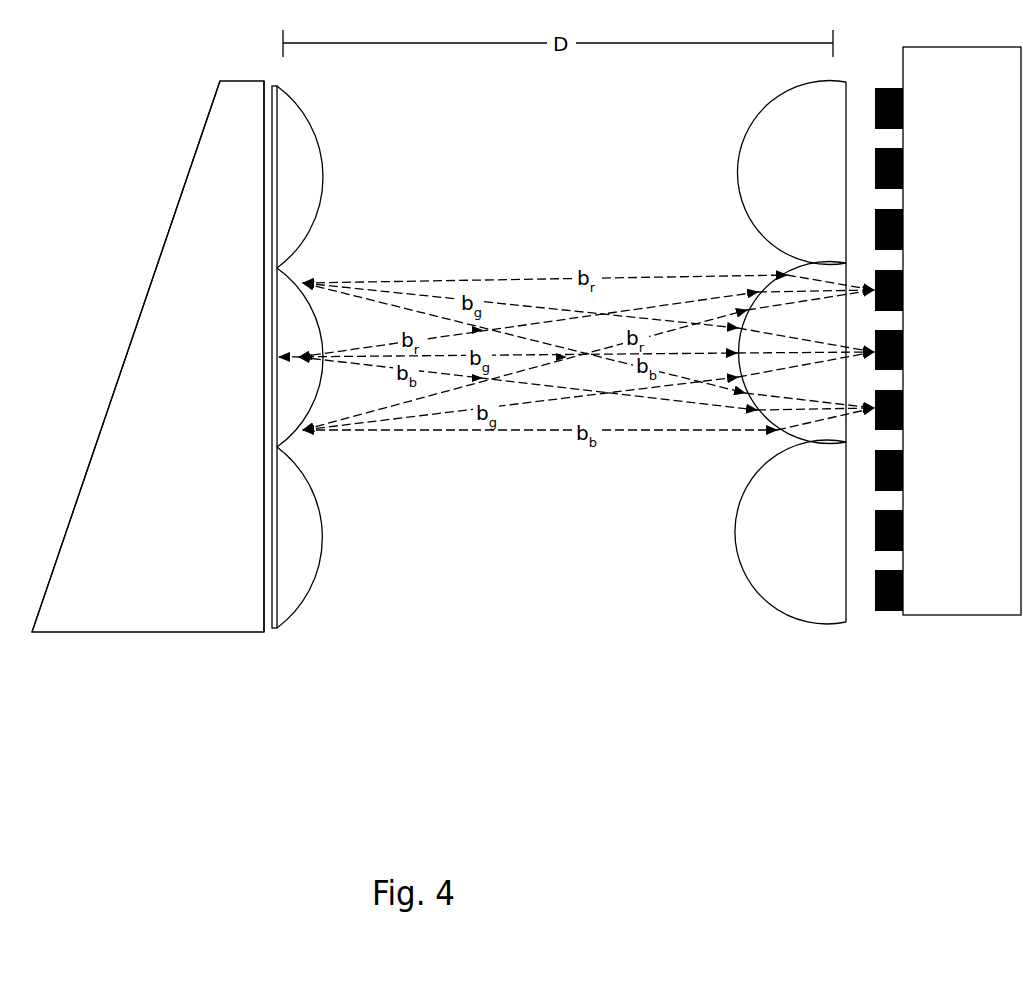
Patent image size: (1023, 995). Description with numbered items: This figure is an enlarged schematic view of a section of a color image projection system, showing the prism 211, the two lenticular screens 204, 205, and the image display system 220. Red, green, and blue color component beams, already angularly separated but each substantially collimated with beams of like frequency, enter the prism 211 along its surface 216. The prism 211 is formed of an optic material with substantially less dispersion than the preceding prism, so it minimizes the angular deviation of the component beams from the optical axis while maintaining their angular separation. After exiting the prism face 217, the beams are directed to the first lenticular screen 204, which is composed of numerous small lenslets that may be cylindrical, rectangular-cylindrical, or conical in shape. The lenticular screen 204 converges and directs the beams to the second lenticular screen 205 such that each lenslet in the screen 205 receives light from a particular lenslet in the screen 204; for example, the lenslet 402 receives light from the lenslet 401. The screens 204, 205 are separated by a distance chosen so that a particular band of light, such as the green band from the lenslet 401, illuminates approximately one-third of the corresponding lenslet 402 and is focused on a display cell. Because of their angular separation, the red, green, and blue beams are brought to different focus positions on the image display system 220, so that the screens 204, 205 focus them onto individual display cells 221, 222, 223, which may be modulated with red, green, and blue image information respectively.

The prism 211 is at (187, 627).
The surface 216 is at (82, 498).
The prism face 217 is at (264, 495).
The lenticular screen 204 is at (308, 602).
The lenslet 401 is at (317, 403).
The lenticular screen 205 is at (800, 613).
The lenslet 402 is at (757, 412).
The image display system 220 is at (948, 612).
The display cell 221 is at (903, 290).
The display cell 222 is at (903, 352).
The display cell 223 is at (903, 422).